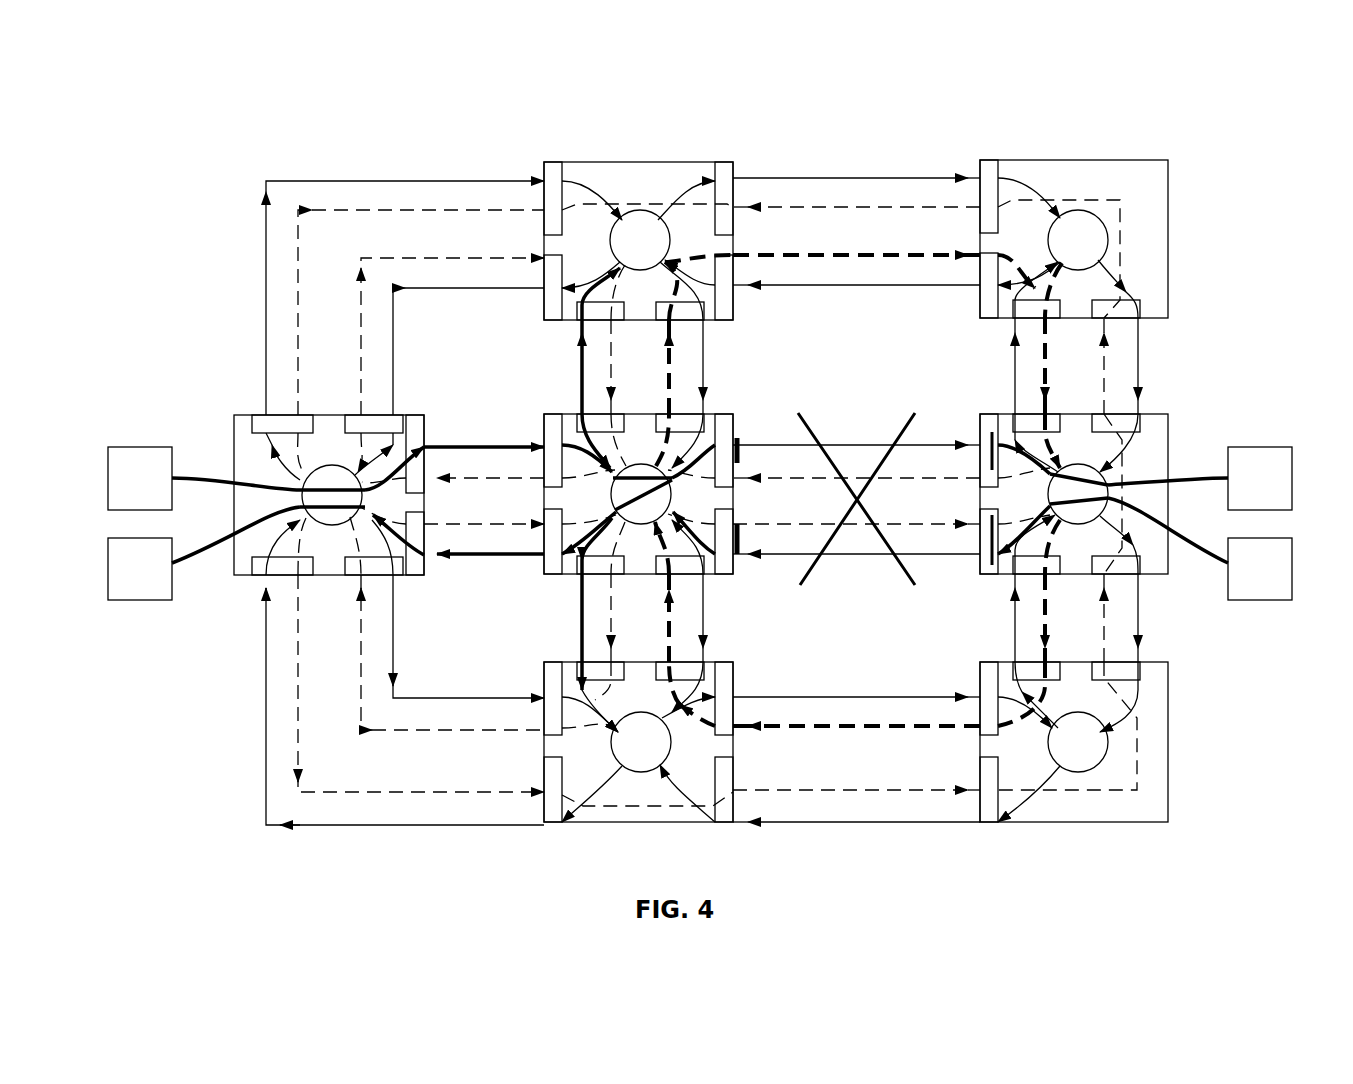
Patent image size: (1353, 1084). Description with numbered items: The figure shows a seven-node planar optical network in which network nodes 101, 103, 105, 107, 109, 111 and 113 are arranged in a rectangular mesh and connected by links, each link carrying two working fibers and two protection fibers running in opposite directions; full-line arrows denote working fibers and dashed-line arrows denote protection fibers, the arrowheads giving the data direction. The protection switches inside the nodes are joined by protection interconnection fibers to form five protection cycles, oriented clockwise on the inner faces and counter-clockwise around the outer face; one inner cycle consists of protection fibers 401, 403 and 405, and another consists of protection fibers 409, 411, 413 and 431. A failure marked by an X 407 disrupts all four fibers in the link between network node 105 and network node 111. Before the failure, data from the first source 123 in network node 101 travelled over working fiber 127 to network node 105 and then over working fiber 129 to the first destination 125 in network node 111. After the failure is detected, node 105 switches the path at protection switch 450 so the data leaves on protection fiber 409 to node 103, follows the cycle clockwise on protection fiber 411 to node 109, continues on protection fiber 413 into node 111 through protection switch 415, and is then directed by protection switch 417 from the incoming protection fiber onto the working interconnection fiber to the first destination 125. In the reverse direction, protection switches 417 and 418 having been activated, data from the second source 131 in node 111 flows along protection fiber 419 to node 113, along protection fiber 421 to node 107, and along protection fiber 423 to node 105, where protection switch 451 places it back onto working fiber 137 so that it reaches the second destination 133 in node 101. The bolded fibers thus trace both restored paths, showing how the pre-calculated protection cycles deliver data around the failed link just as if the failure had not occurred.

The network node 101 is at (240, 577).
The network node 103 is at (640, 160).
The network node 105 is at (560, 413).
The network node 107 is at (735, 690).
The network node 109 is at (1082, 158).
The network node 111 is at (1160, 412).
The network node 113 is at (1168, 738).
The source S1 123 is at (140, 447).
The destination D1 125 is at (1285, 447).
The source S2 131 is at (1290, 600).
The destination D2 133 is at (140, 600).
The working fiber 127 is at (472, 440).
The working fiber 129 is at (860, 444).
The working fiber 137 is at (487, 560).
The protection fiber 401 is at (363, 305).
The protection fiber 403 is at (608, 358).
The protection fiber 405 is at (478, 482).
The link failure 407 is at (808, 415).
The protection fiber 409 is at (672, 365).
The protection fiber 411 is at (843, 254).
The protection fiber 413 is at (1048, 360).
The protection switch 415 is at (1005, 425).
The protection switch 417 is at (990, 432).
The protection switch 418 is at (990, 570).
The protection fiber 419 is at (1040, 610).
The protection fiber 421 is at (862, 730).
The protection fiber 423 is at (672, 615).
The protection fiber 431 is at (912, 482).
The protection switch 450 is at (740, 460).
The protection switch 451 is at (737, 575).